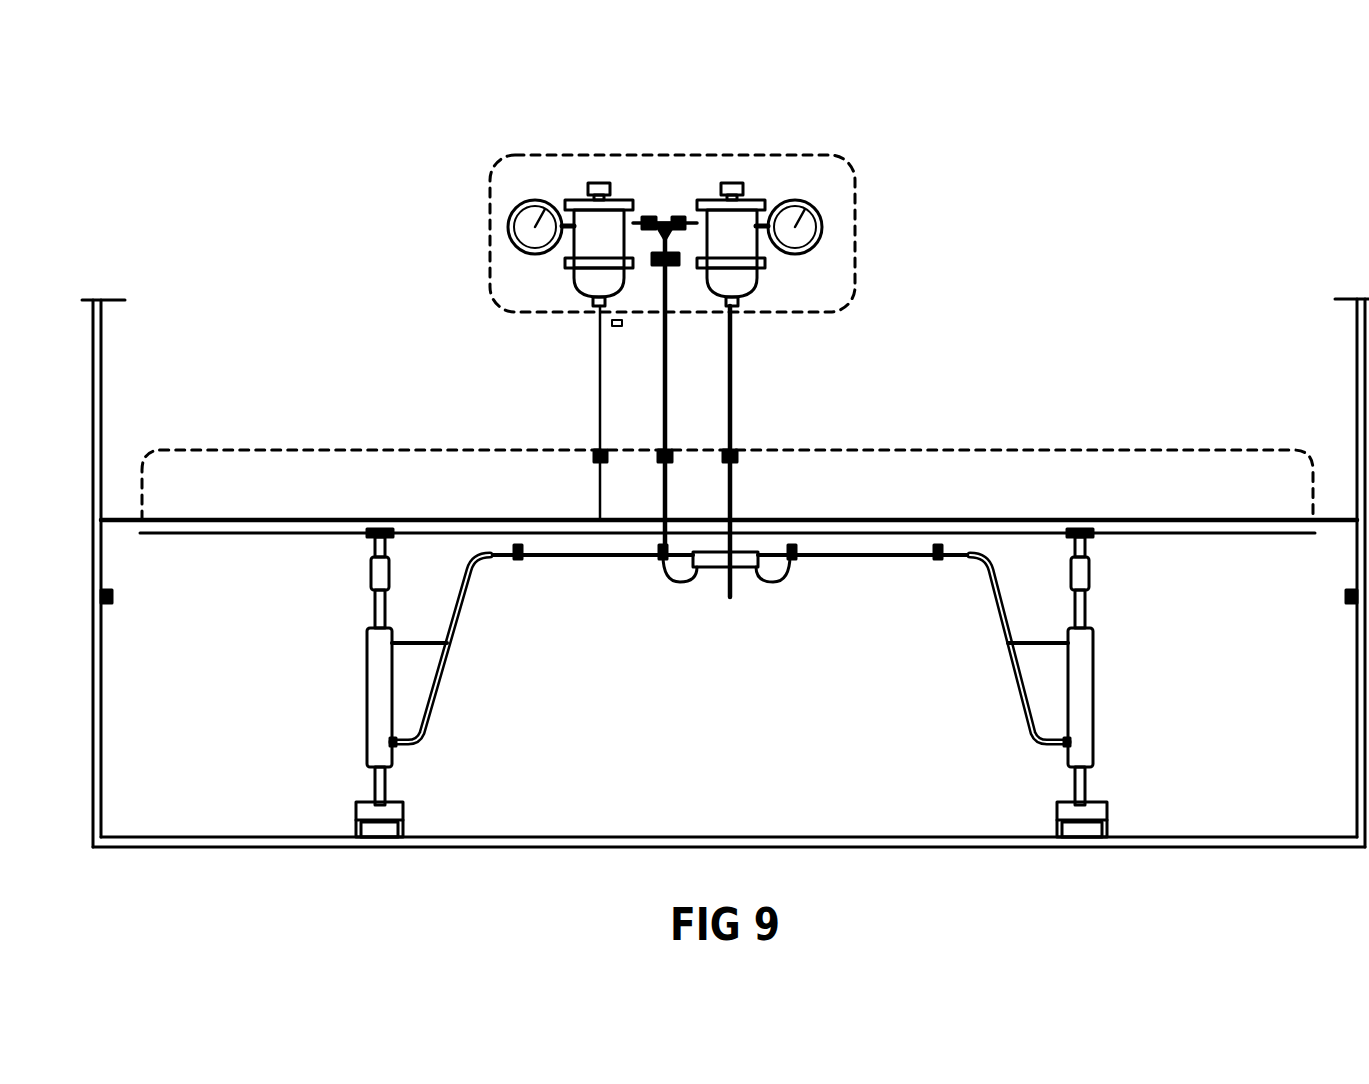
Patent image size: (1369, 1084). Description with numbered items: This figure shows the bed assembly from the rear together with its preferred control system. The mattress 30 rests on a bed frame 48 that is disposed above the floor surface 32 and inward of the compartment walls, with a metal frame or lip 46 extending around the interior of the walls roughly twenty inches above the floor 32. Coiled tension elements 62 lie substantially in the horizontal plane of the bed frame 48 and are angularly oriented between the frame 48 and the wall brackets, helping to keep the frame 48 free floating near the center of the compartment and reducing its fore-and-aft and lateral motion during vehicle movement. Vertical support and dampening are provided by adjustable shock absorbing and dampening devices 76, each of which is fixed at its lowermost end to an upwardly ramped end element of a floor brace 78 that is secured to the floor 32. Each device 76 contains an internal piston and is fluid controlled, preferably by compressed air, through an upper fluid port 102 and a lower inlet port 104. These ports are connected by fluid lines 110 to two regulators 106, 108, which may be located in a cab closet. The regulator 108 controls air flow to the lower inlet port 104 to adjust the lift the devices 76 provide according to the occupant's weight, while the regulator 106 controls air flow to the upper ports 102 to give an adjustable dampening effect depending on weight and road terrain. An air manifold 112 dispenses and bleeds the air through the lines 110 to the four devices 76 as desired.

The mattress 30 is at (285, 485).
The floor surface 32 is at (630, 848).
The metal frame or lip 46 is at (1350, 608).
The bed frame 48 is at (1167, 516).
The tension element 62 is at (130, 515).
The shock absorbing and dampening device 76 is at (366, 715).
The floor brace 78 is at (410, 805).
The upper fluid port 102 is at (395, 642).
The lower inlet port 104 is at (395, 745).
The regulator 106 is at (589, 194).
The regulator 108 is at (711, 192).
The fluid line 110 is at (461, 632).
The air manifold 112 is at (745, 535).